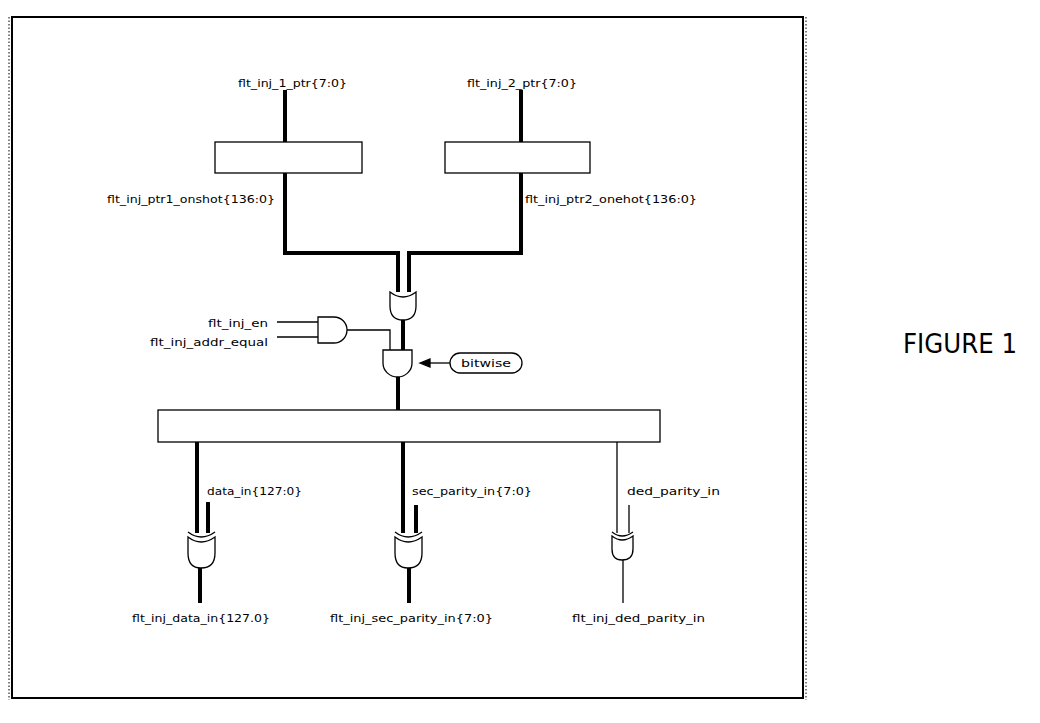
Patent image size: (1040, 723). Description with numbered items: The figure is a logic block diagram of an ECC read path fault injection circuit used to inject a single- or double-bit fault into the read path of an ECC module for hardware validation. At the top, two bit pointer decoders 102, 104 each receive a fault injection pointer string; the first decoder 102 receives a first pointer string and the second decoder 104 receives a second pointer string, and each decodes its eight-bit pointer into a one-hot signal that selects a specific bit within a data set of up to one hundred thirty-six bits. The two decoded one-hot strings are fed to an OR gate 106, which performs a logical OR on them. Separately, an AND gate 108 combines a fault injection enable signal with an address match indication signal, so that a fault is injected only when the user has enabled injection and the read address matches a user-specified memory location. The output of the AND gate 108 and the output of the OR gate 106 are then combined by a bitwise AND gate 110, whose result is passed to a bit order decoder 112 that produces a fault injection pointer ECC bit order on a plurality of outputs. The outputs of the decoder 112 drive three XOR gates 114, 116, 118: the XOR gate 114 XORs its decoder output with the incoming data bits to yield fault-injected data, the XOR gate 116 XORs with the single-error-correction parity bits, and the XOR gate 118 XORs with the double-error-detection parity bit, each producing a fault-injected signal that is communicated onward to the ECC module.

The bit pointer decoder 102 is at (242, 147).
The bit pointer decoder 104 is at (546, 147).
The OR gate 106 is at (428, 313).
The AND gate 108 is at (333, 313).
The AND gate 110 is at (371, 380).
The bit order decoder 112 is at (385, 425).
The XOR gate 114 is at (172, 522).
The XOR gate 116 is at (376, 522).
The XOR gate 118 is at (594, 522).